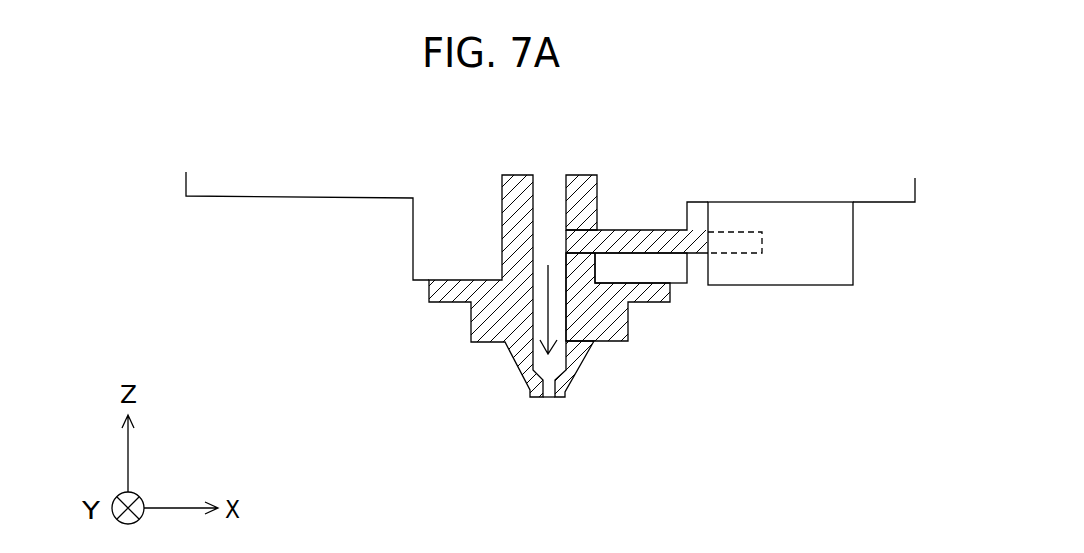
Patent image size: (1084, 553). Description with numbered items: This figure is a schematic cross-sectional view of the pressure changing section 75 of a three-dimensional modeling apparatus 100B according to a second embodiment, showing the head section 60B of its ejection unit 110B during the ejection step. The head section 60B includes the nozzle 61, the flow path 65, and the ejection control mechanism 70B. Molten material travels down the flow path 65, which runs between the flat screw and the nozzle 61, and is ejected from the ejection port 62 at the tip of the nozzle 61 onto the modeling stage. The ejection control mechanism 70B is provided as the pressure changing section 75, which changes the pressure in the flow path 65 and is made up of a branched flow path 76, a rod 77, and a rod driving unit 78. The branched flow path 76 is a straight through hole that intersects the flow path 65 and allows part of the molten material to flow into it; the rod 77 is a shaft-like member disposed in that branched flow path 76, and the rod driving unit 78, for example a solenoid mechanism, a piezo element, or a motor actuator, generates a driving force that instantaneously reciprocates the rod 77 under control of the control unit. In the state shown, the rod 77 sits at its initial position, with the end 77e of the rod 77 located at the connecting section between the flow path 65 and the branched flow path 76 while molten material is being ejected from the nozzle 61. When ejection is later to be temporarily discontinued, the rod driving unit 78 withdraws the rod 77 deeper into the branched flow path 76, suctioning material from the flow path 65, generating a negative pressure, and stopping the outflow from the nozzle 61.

The three-dimensional modeling apparatus 100B is at (128, 119).
The ejection unit 110B is at (212, 119).
The head section 60B is at (356, 324).
The nozzle 61 is at (513, 355).
The ejection port 62 is at (544, 399).
The flow path 65 is at (553, 202).
The ejection control mechanism 70B is at (798, 338).
The pressure changing section 75 is at (745, 302).
The branched flow path 76 is at (643, 240).
The rod 77 is at (597, 272).
The end of the rod 77e is at (558, 248).
The rod driving unit 78 is at (843, 257).